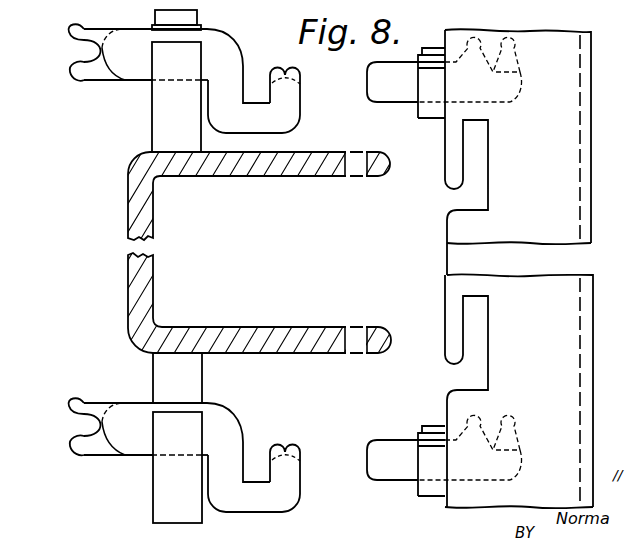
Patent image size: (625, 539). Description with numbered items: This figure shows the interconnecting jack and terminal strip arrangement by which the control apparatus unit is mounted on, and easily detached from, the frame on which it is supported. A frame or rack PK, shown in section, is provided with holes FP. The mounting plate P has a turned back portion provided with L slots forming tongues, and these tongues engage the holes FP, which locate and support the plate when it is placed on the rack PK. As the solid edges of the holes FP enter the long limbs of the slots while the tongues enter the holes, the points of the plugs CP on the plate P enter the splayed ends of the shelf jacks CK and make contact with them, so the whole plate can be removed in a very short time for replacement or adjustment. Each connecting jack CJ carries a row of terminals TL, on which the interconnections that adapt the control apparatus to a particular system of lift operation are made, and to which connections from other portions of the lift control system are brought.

The terminals TL is at (75, 63).
The connecting jack CJ is at (205, 48).
The shelf jack CK is at (287, 103).
The frame or rack PK is at (243, 177).
The holes FP is at (357, 342).
The mounting plate P is at (505, 268).
The plug CP is at (406, 272).